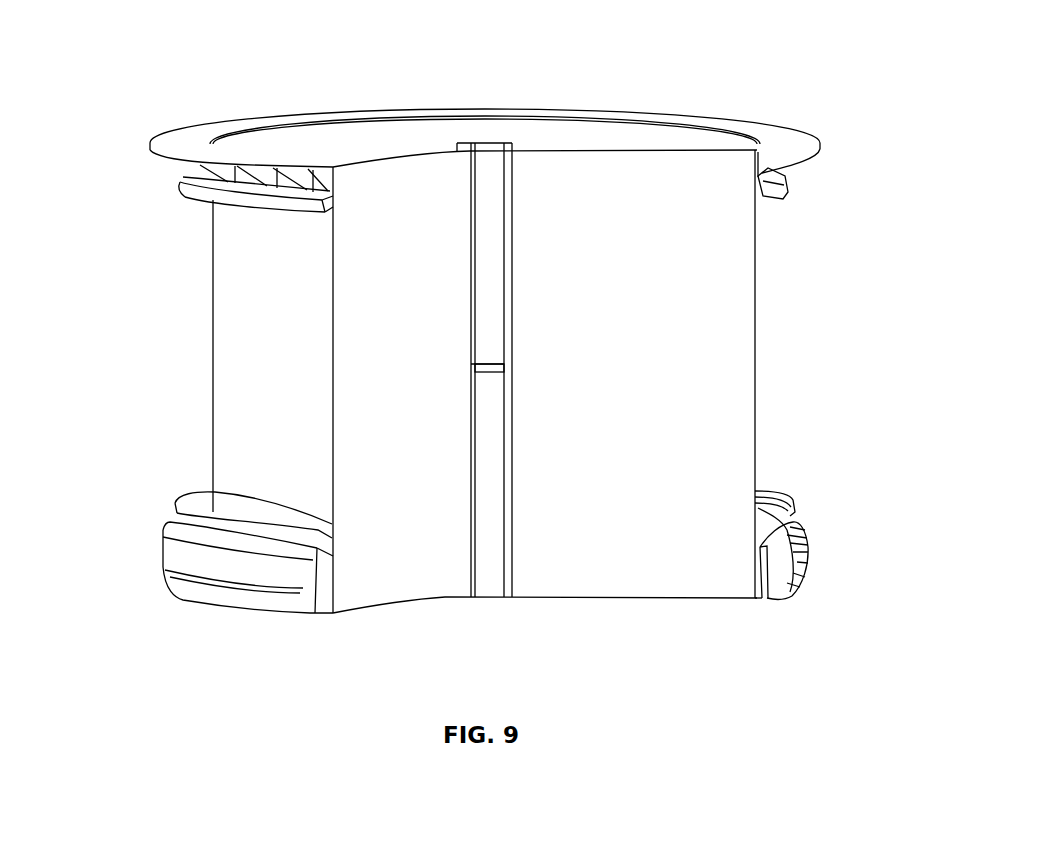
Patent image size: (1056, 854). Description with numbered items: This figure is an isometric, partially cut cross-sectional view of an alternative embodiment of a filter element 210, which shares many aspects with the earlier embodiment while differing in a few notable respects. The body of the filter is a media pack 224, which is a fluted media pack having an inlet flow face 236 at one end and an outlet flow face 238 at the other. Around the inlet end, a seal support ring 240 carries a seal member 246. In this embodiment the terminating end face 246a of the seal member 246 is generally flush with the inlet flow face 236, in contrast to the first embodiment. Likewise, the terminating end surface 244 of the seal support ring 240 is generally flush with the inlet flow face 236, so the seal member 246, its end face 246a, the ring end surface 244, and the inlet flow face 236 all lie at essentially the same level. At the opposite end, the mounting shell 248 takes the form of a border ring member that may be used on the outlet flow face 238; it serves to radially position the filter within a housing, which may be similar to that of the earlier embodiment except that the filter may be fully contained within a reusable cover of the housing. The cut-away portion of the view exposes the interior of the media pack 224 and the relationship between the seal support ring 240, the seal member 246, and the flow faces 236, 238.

The filter element 210 is at (556, 366).
The media pack 224 is at (742, 358).
The inlet flow face 236 is at (608, 595).
The outlet flow face 238 is at (630, 138).
The seal support ring 240 is at (753, 573).
The terminating end surface 244 is at (753, 600).
The seal member 246 is at (798, 558).
The terminating end face 246a is at (768, 600).
The mounting shell 248 is at (178, 195).